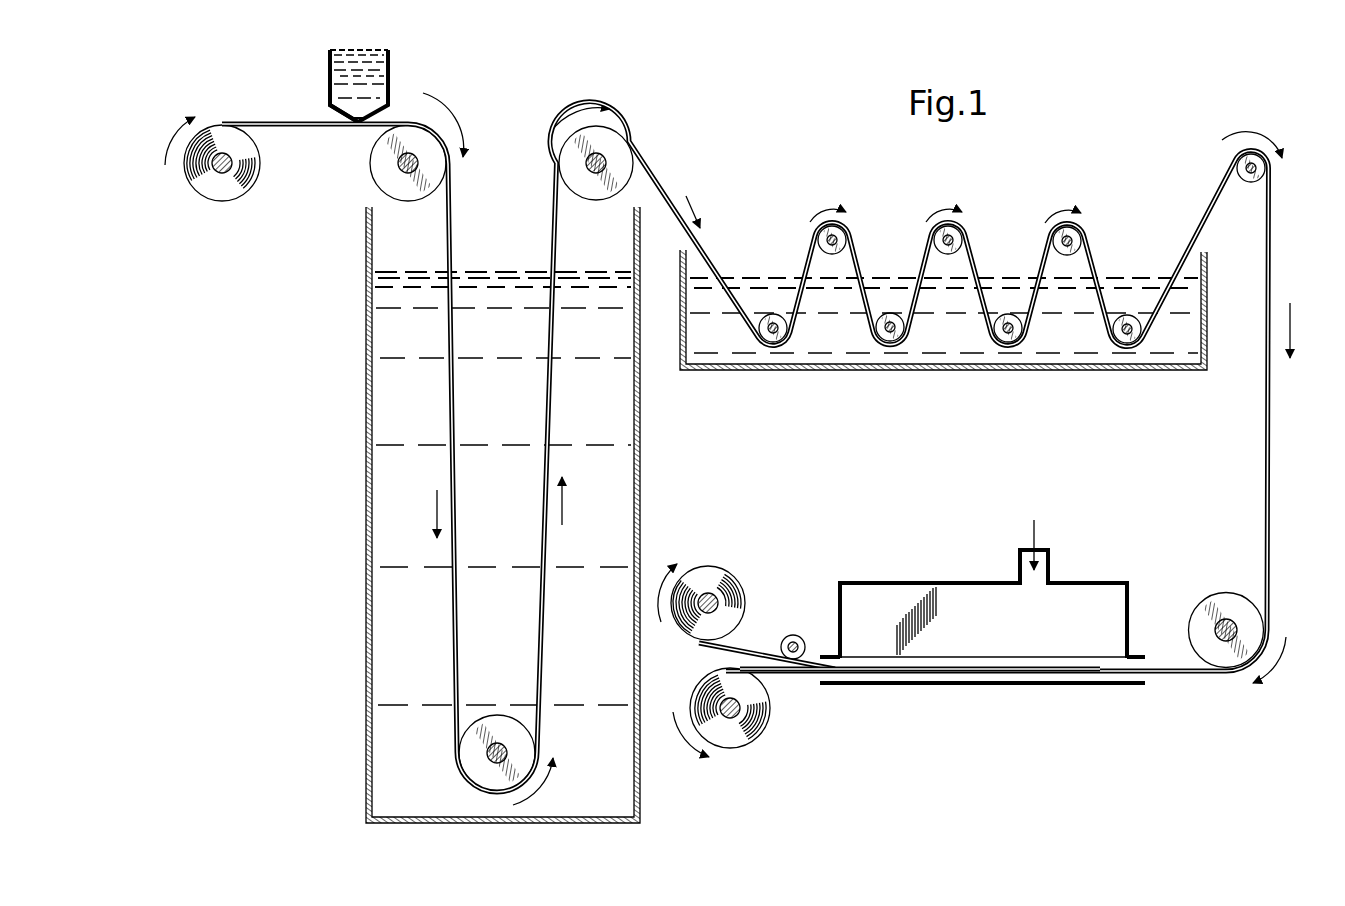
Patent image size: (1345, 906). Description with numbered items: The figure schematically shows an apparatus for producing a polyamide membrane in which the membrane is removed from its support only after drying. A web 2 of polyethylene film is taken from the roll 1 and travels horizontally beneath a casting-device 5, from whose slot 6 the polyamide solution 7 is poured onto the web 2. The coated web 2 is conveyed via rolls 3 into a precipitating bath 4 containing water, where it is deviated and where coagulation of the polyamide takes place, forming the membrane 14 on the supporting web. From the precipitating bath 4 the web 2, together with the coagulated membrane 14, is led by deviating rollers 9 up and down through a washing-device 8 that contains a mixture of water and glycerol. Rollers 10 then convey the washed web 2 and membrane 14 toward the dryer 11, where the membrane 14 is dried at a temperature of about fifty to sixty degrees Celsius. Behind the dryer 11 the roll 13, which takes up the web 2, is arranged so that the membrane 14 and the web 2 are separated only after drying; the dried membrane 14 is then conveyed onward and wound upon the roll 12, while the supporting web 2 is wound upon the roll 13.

The roll 1 is at (207, 186).
The web 2 is at (262, 121).
The rolls 3 is at (383, 165).
The precipitating bath 4 is at (363, 457).
The casting-device 5 is at (392, 80).
The slot 6 is at (356, 128).
The solution 7 is at (340, 80).
The washing-device 8 is at (893, 374).
The deviating rollers 9 is at (821, 236).
The rollers 10 is at (1267, 170).
The dryer 11 is at (931, 580).
The roll 12 is at (760, 718).
The roll 13 is at (709, 577).
The membrane 14 is at (554, 157).